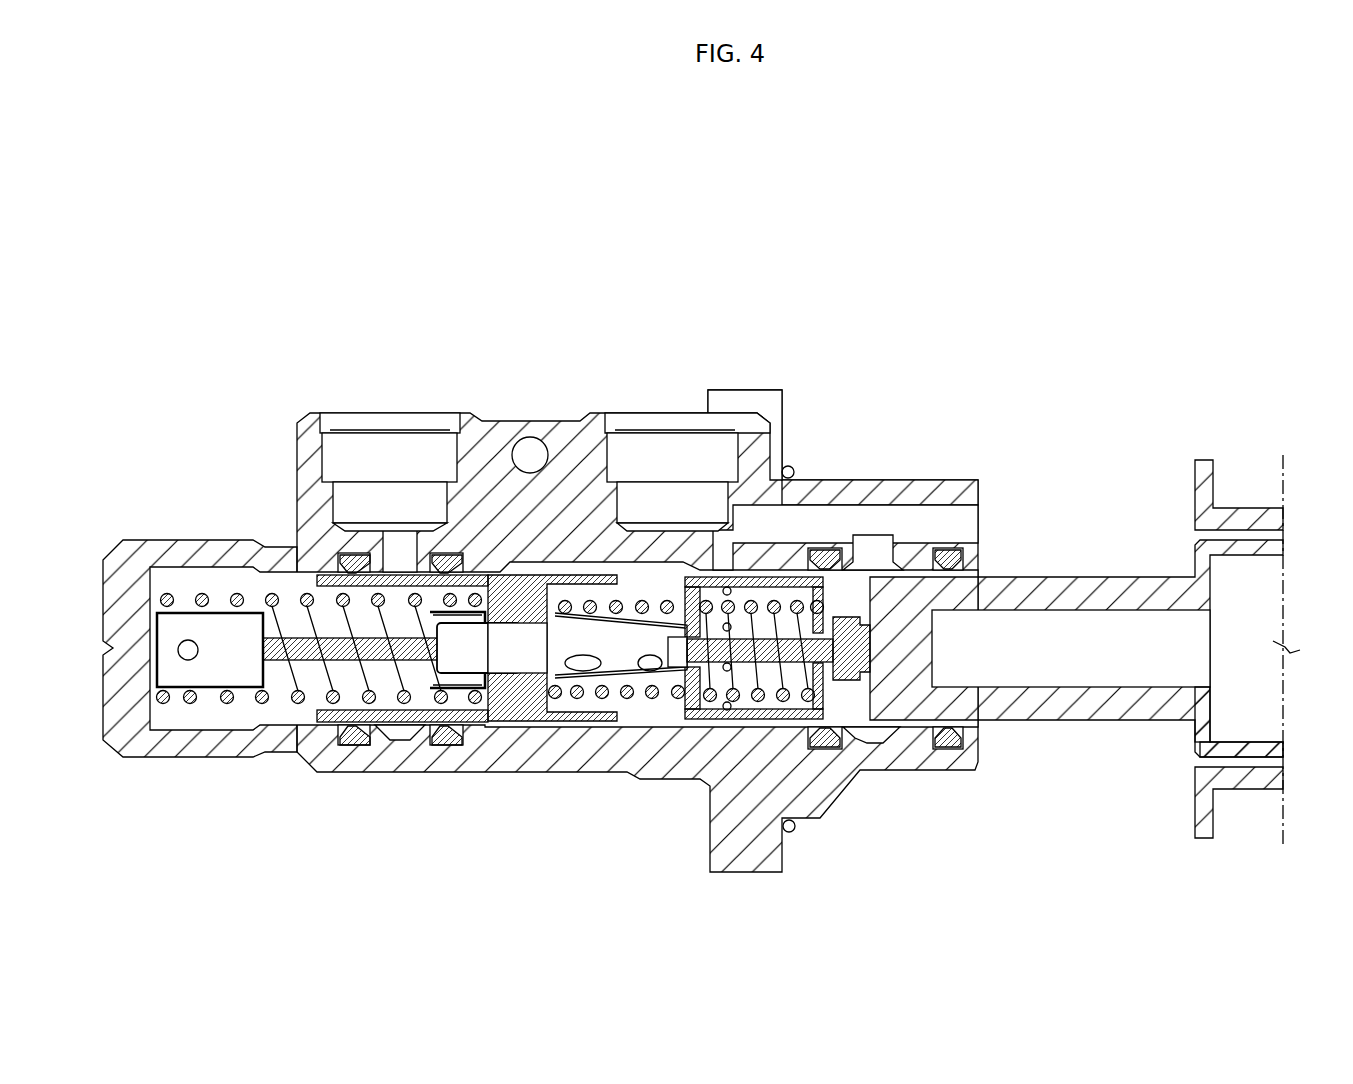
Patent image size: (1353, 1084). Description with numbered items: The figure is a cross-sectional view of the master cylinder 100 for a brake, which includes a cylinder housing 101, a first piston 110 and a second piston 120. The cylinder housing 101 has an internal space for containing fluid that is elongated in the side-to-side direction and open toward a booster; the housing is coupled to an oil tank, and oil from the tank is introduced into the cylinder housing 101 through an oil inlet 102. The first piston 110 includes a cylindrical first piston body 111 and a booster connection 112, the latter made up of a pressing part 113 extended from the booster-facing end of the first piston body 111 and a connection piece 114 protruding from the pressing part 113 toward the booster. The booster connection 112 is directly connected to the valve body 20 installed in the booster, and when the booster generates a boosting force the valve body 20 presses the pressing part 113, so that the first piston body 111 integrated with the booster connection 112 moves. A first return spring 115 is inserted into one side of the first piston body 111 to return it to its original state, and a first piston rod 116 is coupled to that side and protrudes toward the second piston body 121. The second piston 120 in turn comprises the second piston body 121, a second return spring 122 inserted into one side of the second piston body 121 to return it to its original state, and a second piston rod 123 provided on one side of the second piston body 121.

The master cylinder 100 is at (211, 320).
The cylinder housing 101 is at (571, 485).
The oil inlet 102 is at (389, 450).
The first piston 110 is at (885, 734).
The first piston body 111 is at (997, 710).
The booster connection 112 is at (1159, 791).
The pressing part 113 is at (1200, 712).
The connection piece 114 is at (1252, 755).
The first return spring 115 is at (662, 700).
The first piston rod 116 is at (703, 700).
The second piston 120 is at (339, 769).
The second piston body 121 is at (507, 697).
The second return spring 122 is at (300, 705).
The second piston rod 123 is at (347, 655).
The valve body 20 is at (1256, 515).